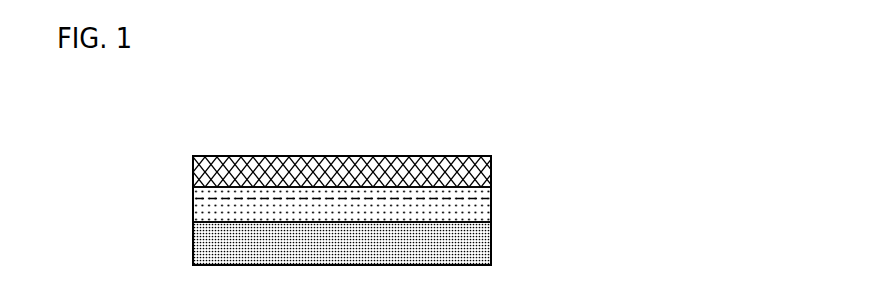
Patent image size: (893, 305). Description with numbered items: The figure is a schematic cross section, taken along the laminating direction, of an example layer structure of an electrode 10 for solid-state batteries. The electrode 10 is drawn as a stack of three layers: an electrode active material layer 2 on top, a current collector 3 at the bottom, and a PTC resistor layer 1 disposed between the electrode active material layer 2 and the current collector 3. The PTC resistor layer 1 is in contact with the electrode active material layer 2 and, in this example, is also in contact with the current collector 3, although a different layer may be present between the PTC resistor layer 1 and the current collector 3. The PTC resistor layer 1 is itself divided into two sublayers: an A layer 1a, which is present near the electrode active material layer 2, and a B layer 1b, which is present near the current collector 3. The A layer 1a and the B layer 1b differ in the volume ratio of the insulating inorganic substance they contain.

The electrode for solid-state batteries 10 is at (364, 136).
The PTC resistor layer 1 is at (495, 187).
The A layer 1a is at (193, 187).
The B layer 1b is at (193, 222).
The electrode active material layer 2 is at (493, 173).
The current collector 3 is at (493, 243).